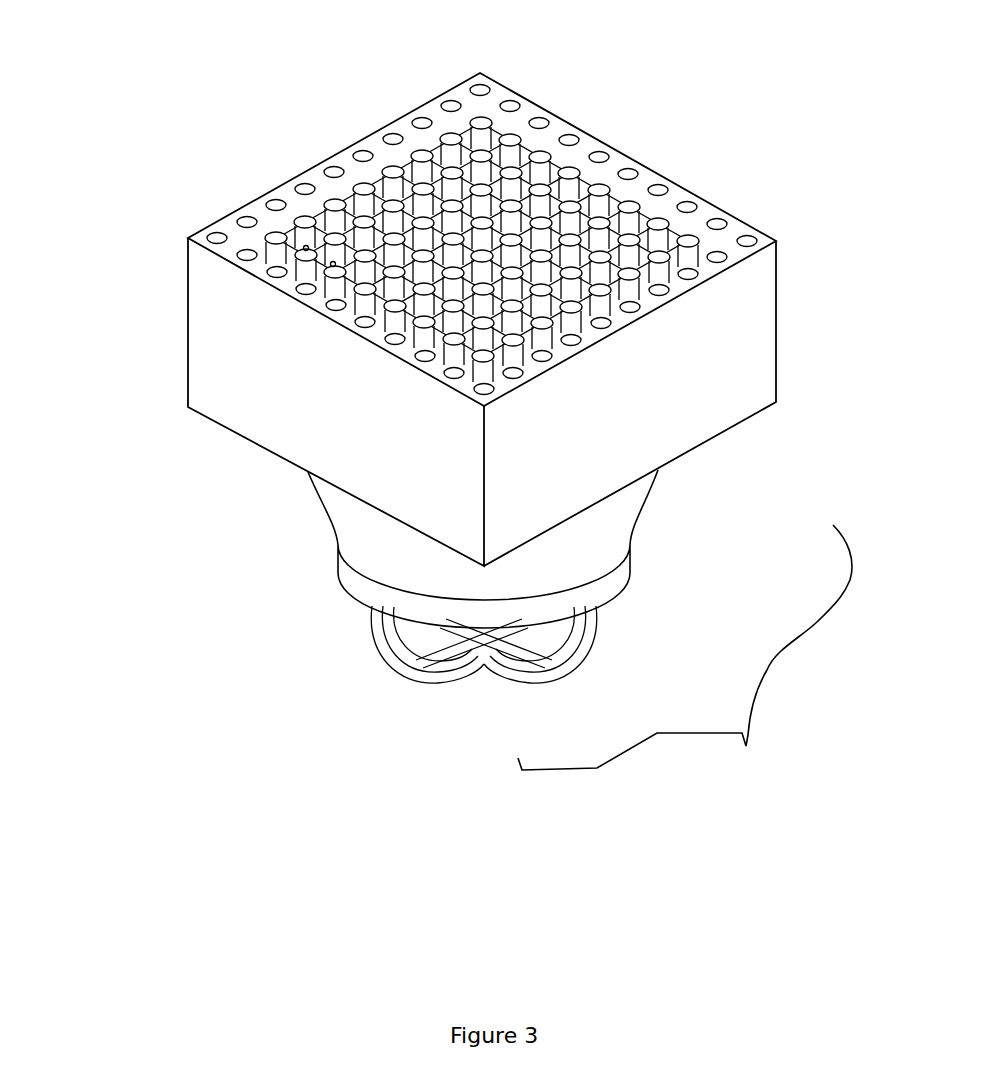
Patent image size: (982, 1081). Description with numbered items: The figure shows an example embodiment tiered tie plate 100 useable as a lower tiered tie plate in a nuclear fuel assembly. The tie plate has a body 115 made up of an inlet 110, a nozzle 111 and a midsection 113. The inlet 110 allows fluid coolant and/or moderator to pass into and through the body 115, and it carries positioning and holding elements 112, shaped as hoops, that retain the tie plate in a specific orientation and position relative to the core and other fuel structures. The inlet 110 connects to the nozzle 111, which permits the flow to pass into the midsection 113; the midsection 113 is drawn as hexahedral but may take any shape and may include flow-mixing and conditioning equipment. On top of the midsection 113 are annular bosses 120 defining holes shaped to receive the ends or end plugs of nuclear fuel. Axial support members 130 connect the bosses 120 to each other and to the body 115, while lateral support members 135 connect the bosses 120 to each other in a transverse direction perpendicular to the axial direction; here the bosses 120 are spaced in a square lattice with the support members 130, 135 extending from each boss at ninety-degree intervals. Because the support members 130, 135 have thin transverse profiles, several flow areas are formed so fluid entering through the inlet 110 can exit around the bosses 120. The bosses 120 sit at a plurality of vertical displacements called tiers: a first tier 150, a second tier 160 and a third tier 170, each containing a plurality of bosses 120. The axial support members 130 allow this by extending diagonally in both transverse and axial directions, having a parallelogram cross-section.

The tiered tie plate 100 is at (220, 562).
The inlet 110 is at (532, 655).
The nozzle 111 is at (593, 558).
The positioning and holding elements 112 is at (397, 655).
The midsection 113 is at (668, 407).
The body 115 is at (685, 655).
The bosses 120 is at (610, 145).
The axial support members 130 is at (707, 230).
The lateral support members 135 is at (332, 260).
The tier 150 is at (217, 227).
The tier 160 is at (268, 207).
The tier 170 is at (355, 148).